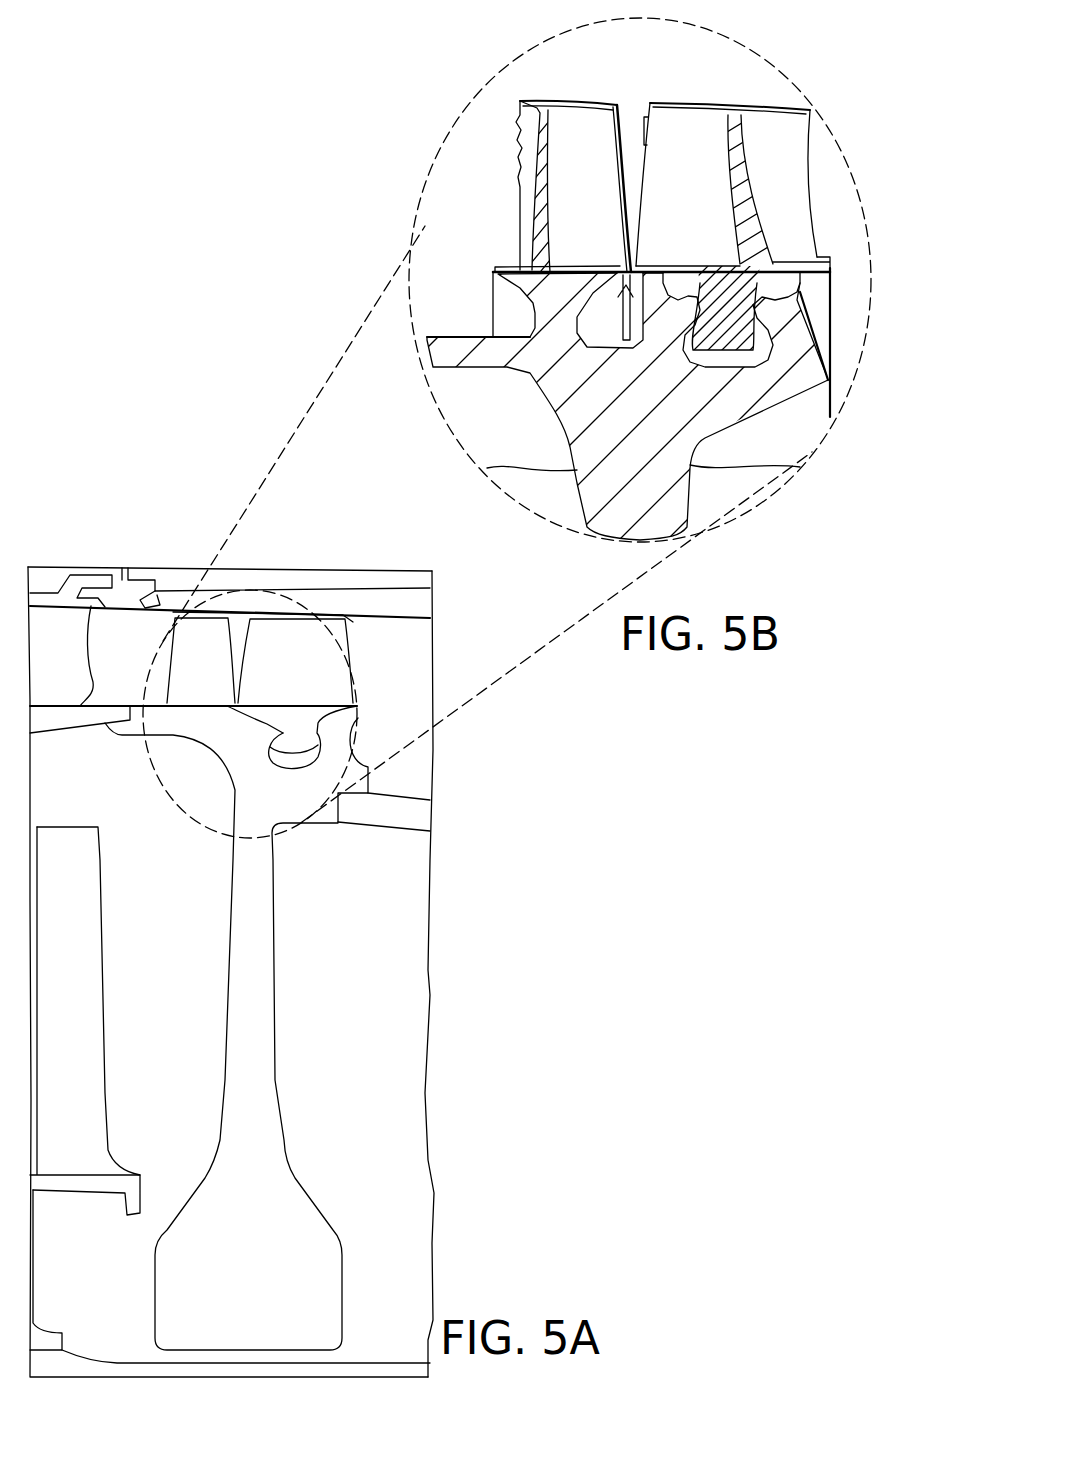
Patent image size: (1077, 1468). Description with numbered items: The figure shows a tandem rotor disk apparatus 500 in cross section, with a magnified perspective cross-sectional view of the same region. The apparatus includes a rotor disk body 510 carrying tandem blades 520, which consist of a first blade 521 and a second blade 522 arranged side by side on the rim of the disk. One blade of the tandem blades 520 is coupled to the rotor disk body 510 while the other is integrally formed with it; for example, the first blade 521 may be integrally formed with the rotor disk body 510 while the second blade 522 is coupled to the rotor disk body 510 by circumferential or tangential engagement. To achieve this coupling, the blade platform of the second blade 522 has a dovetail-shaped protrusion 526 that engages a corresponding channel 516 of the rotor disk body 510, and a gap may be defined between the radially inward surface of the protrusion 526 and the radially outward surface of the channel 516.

In FIG. 5A, the tandem rotor disk apparatus 500 is at (342, 1018).
In FIG. 5A, the rotor disk body 510 is at (271, 1044).
In FIG. 5B, the rotor disk body 510 is at (672, 457).
In FIG. 5A, the channel 516 is at (298, 762).
In FIG. 5B, the channel 516 is at (768, 322).
In FIG. 5A, the tandem blades 520 is at (250, 656).
In FIG. 5B, the tandem blades 520 is at (674, 181).
In FIG. 5A, the first blade 521 is at (219, 681).
In FIG. 5B, the first blade 521 is at (599, 206).
In FIG. 5A, the second blade 522 is at (321, 681).
In FIG. 5B, the second blade 522 is at (699, 206).
In FIG. 5A, the dovetail-shaped protrusion 526 is at (283, 733).
In FIG. 5B, the dovetail-shaped protrusion 526 is at (785, 305).